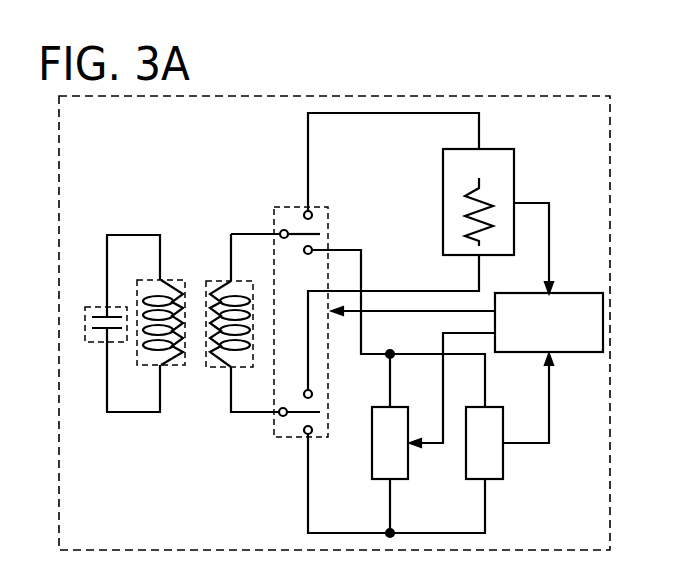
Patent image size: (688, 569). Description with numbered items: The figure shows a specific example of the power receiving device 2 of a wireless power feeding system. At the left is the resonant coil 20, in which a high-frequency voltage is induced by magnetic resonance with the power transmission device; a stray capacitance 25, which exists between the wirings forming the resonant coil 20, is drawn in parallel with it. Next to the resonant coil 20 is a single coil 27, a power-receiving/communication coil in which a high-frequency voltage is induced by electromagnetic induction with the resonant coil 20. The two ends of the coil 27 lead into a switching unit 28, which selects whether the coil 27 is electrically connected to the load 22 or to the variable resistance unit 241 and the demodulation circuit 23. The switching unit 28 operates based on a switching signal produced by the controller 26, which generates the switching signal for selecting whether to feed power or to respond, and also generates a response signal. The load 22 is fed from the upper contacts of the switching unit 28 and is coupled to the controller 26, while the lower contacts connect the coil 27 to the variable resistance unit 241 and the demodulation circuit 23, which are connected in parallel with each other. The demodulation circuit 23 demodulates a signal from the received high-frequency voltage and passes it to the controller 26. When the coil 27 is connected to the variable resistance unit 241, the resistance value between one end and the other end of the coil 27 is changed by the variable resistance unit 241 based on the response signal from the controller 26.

The power receiving device 2 is at (334, 323).
The resonant coil 20 is at (170, 366).
The load 22 is at (498, 221).
The demodulation circuit 23 is at (509, 416).
The variable resistance unit 241 is at (378, 481).
The stray capacitance 25 is at (97, 305).
The controller 26 is at (467, 370).
The coil 27 is at (220, 281).
The switching unit 28 is at (284, 207).